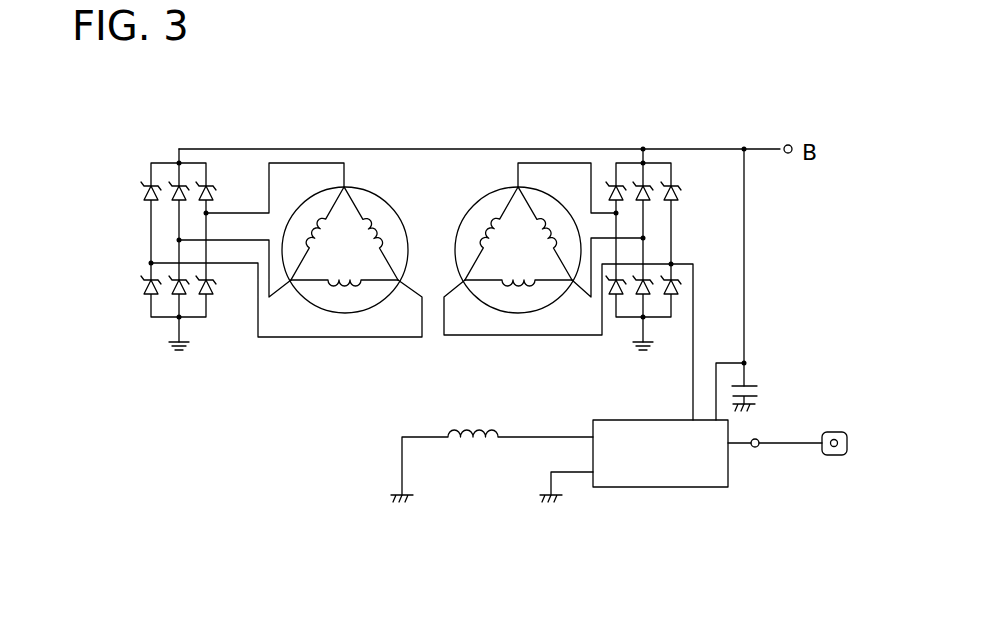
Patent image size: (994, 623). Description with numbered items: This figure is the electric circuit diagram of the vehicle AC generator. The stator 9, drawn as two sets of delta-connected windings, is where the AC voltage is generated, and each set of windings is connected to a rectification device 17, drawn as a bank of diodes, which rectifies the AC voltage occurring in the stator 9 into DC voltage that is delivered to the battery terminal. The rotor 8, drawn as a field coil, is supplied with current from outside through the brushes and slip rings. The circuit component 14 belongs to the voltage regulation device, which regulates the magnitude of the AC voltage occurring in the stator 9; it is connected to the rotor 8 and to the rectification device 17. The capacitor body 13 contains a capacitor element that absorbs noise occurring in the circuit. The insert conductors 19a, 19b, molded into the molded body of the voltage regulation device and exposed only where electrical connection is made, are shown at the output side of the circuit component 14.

The rectification device 17 is at (212, 172).
The stator 9 is at (387, 202).
The rotor 8 is at (480, 425).
The circuit component 14 is at (630, 473).
The capacitor body 13 is at (755, 382).
The insert conductor 19b is at (740, 445).
The insert conductor 19a is at (800, 445).